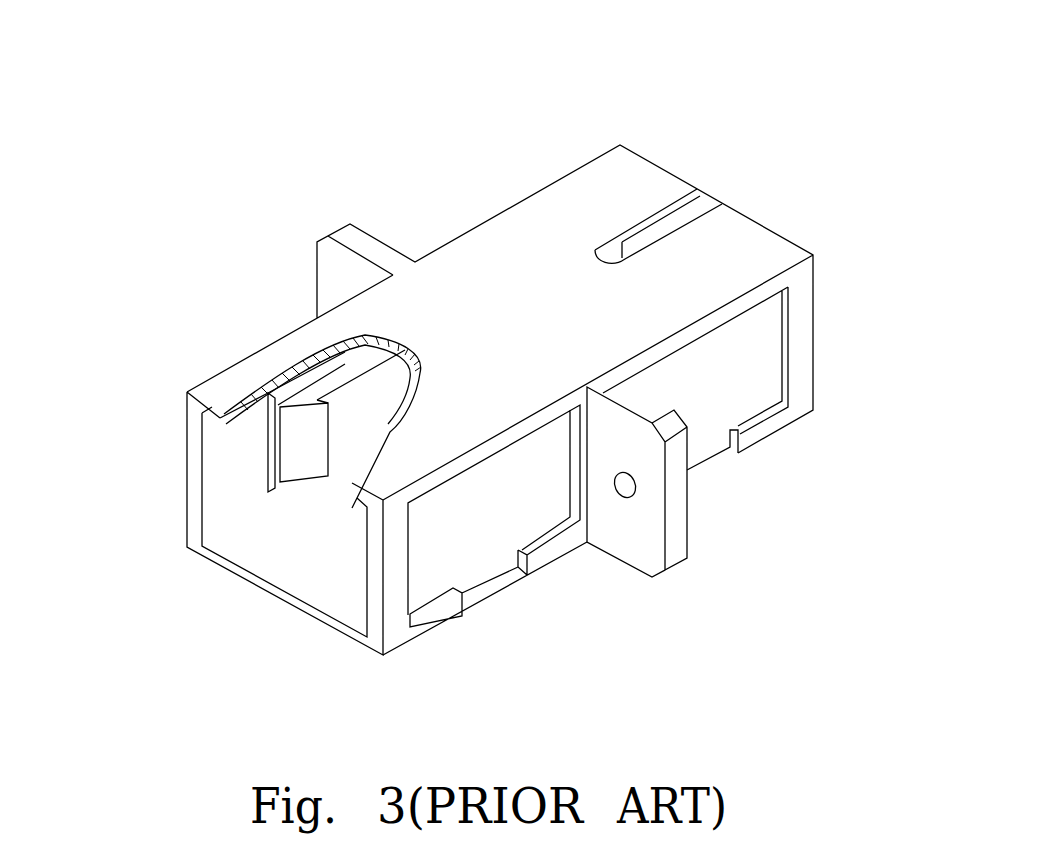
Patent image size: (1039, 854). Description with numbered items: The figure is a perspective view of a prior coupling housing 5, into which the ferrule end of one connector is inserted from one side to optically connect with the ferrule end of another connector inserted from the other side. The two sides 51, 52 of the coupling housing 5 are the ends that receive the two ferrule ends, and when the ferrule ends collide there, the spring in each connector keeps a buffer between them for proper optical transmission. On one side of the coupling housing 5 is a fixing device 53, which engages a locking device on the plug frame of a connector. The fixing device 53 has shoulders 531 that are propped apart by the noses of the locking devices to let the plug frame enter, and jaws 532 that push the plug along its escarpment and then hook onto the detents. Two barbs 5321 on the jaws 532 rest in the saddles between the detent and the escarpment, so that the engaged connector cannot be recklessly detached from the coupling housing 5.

The coupling housing 5 is at (796, 111).
The side of the coupling housing 51 is at (335, 632).
The side of the coupling housing 52 is at (815, 295).
The fixing device 53 is at (241, 463).
The shoulder 531 is at (272, 488).
The jaw 532 is at (348, 435).
The barb 5321 is at (305, 458).